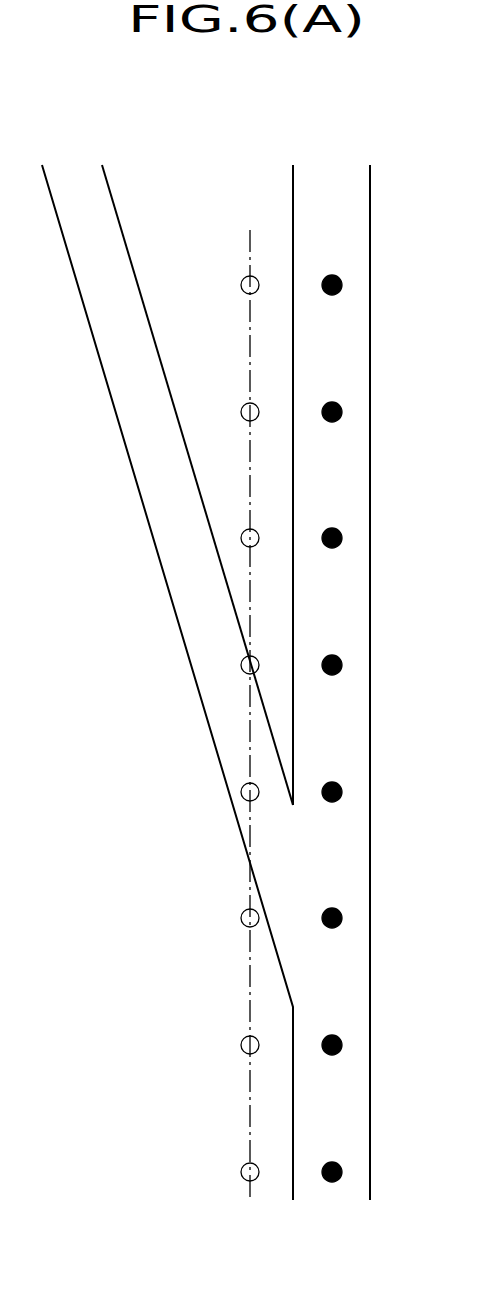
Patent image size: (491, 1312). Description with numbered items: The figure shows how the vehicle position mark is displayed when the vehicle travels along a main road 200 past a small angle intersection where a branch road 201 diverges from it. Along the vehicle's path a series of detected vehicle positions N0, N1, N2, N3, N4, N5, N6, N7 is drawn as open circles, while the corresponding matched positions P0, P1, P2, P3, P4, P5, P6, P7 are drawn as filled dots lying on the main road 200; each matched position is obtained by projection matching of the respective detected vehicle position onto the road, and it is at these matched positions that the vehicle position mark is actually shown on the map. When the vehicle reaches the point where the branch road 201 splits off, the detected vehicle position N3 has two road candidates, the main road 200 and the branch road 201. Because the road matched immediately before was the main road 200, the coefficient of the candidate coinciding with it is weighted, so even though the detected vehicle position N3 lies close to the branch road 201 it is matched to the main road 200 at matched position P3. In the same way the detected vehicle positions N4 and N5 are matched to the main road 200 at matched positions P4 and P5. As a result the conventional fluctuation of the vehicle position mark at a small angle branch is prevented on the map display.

The branch road 201 is at (77, 172).
The main road 200 is at (333, 177).
The detected vehicle position N0 is at (233, 1172).
The detected vehicle position N1 is at (233, 1045).
The detected vehicle position N2 is at (233, 918).
The detected vehicle position N3 is at (233, 792).
The detected vehicle position N4 is at (264, 665).
The detected vehicle position N5 is at (264, 538).
The detected vehicle position N6 is at (233, 412).
The detected vehicle position N7 is at (233, 285).
The matched position P0 is at (342, 1171).
The matched position P1 is at (342, 1044).
The matched position P2 is at (342, 917).
The matched position P3 is at (342, 791).
The matched position P4 is at (342, 664).
The matched position P5 is at (342, 537).
The matched position P6 is at (342, 411).
The matched position P7 is at (342, 284).